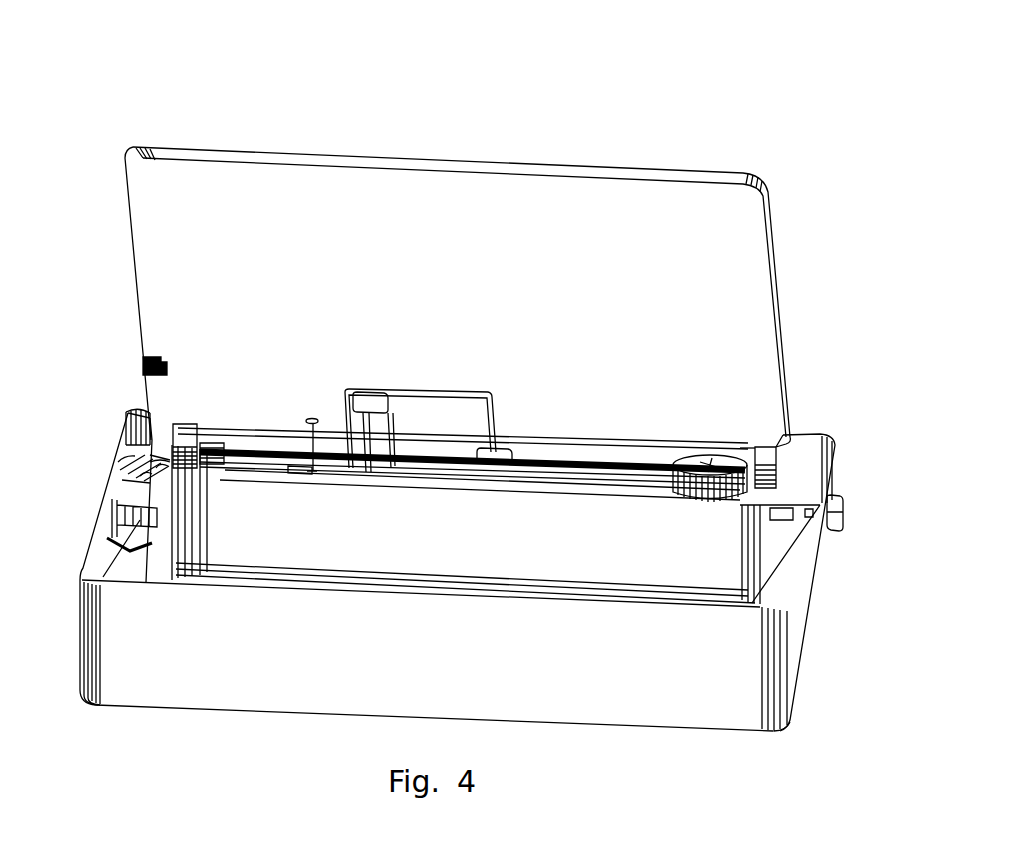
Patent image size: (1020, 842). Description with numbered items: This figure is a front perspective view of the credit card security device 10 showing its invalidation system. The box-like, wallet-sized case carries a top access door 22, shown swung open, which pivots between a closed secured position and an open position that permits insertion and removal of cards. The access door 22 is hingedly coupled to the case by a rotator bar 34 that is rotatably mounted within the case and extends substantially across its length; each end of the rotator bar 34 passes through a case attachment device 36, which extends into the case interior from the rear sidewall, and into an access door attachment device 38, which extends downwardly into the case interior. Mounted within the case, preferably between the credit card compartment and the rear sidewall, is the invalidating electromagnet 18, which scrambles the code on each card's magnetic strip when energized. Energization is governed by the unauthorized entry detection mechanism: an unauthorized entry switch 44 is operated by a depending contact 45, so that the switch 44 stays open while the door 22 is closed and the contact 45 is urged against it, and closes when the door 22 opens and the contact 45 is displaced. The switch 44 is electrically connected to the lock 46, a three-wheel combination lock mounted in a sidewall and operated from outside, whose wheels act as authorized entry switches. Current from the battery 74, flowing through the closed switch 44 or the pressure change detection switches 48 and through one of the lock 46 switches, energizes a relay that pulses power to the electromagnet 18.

The credit card security device 10 is at (683, 89).
The invalidating electromagnet 18 is at (382, 477).
The top access door 22 is at (430, 160).
The rotator bar 34 is at (538, 474).
The case attachment device 36 is at (208, 440).
The access door attachment device 38 is at (180, 432).
The unauthorized entry switch 44 is at (306, 478).
The depending contact 45 is at (310, 416).
The lock 46 is at (123, 457).
The pressure change detection switch 48 is at (366, 392).
The battery 74 is at (683, 489).